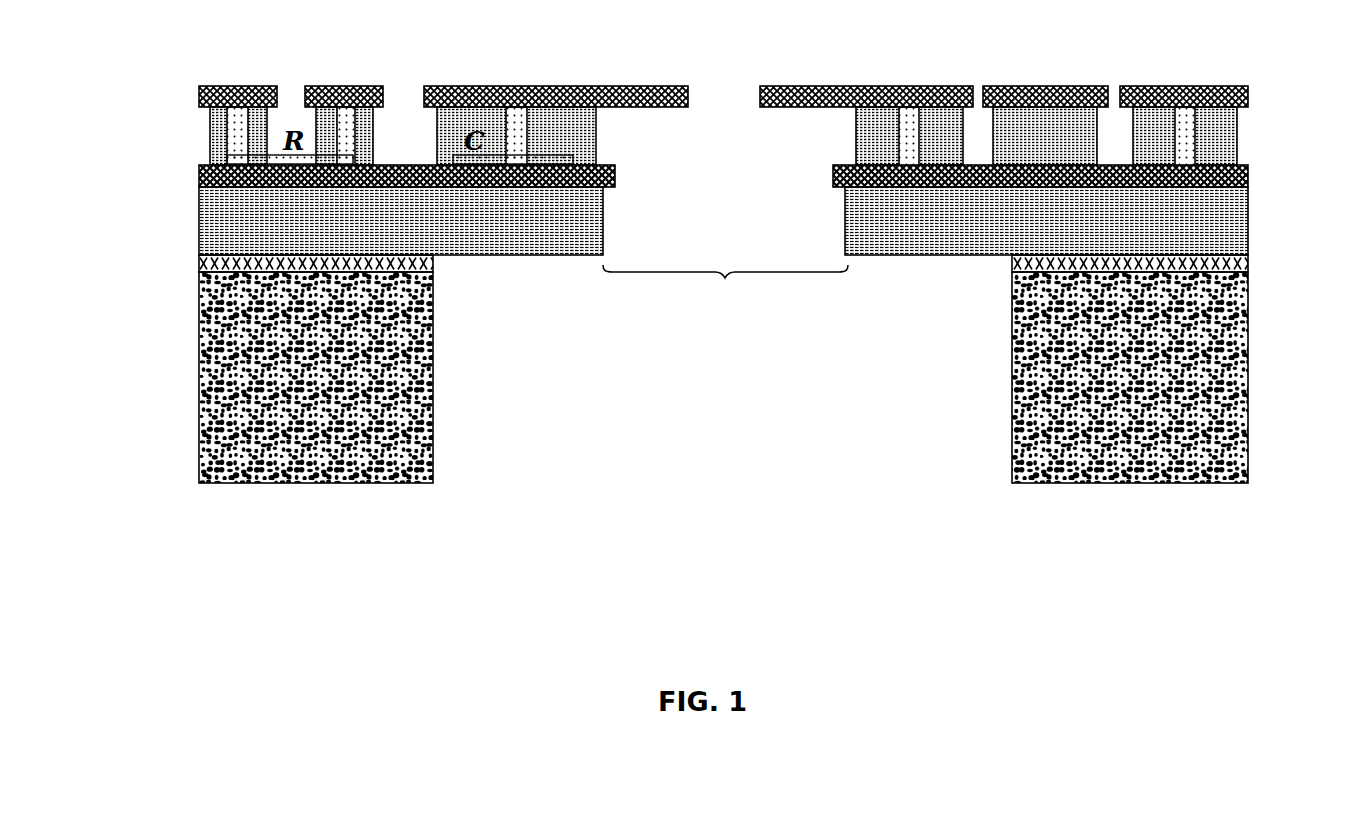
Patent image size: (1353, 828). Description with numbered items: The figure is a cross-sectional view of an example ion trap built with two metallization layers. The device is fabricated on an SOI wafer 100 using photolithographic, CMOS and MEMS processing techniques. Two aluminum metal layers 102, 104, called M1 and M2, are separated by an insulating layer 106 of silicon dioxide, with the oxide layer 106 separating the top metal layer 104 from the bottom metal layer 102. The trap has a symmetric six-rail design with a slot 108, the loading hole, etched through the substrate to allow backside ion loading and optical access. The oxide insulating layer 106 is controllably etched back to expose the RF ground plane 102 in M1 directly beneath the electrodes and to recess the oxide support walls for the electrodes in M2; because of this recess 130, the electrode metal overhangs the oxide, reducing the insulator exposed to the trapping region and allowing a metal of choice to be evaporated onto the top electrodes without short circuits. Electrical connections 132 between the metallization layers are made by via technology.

The SOI wafer 100 is at (702, 329).
The metal layer M1 102 is at (1249, 178).
The metal layer M2 104 is at (1249, 93).
The insulating layer 106 is at (1238, 147).
The slot 108 is at (723, 93).
The recess 130 is at (807, 143).
The electrical connections 132 is at (895, 138).